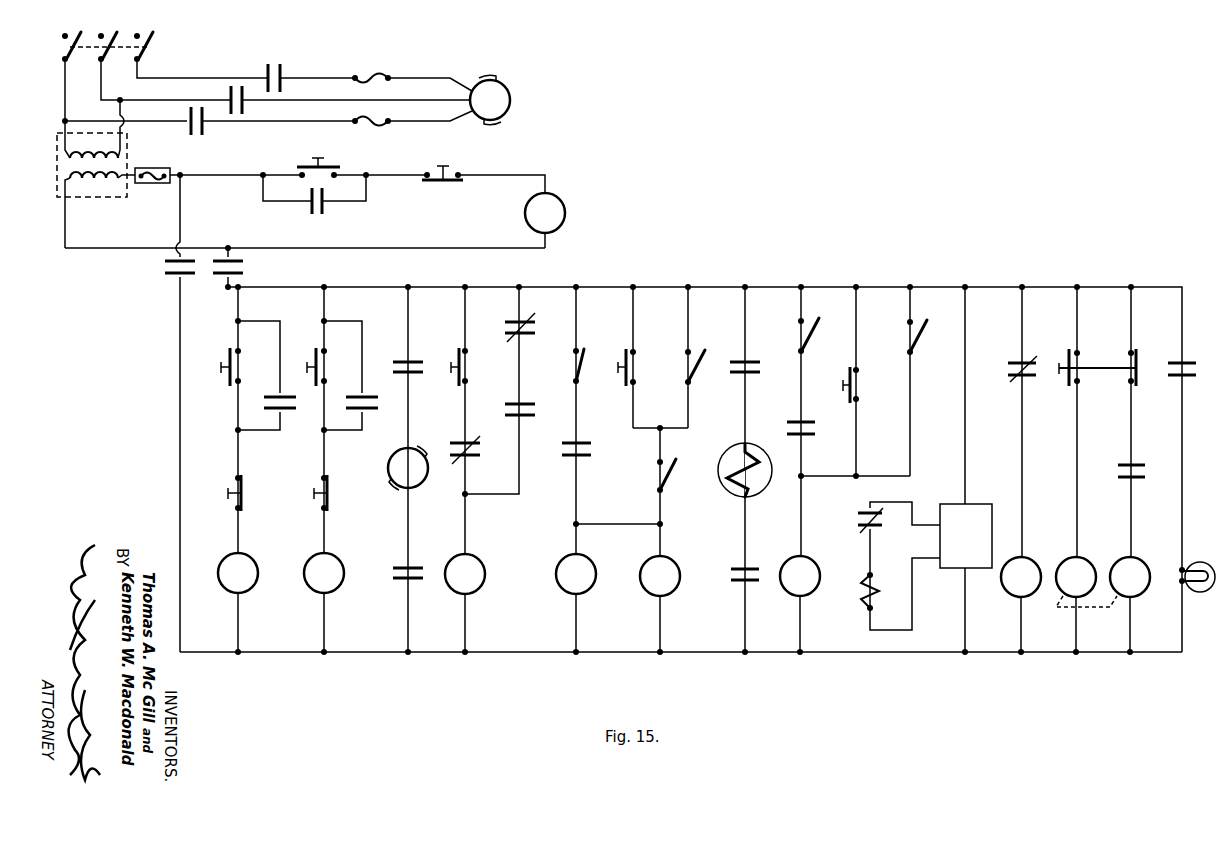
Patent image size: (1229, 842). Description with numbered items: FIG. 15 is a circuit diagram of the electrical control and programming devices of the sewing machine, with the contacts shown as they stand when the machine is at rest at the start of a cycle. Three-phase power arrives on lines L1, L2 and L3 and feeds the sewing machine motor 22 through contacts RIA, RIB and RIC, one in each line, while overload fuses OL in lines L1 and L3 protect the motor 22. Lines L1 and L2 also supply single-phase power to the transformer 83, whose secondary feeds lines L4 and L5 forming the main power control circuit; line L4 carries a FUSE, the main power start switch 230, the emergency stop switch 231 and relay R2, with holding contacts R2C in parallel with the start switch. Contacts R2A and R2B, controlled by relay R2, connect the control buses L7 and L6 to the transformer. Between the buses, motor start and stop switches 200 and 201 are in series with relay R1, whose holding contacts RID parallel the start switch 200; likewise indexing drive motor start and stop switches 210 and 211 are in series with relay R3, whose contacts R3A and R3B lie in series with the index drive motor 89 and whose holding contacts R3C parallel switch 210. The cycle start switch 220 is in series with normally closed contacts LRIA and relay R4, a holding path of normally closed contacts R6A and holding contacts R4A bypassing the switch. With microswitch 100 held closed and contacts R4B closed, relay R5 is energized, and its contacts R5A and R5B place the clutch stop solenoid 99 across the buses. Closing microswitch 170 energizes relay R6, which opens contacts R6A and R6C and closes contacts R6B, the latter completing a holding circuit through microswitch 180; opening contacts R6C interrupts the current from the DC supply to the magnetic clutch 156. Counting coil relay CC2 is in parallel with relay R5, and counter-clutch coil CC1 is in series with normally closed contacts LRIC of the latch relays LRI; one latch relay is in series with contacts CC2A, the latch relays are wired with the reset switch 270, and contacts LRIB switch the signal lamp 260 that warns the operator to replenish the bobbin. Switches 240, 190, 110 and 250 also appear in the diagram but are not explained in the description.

The power line L1 is at (124, 78).
The power line L2 is at (164, 67).
The power line L3 is at (201, 56).
The relay contacts RIA is at (256, 74).
The relay contacts RIB is at (219, 98).
The relay contacts RIC is at (178, 125).
The overload fuse OL is at (372, 97).
The sewing machine motor 22 is at (490, 99).
The transformer 83 is at (96, 174).
The fuse FUSE is at (156, 166).
The control circuit line L4 is at (236, 168).
The main power start switch 230 is at (326, 162).
The holding contacts R2C is at (314, 199).
The emergency stop switch 231 is at (452, 167).
The relay R2 is at (511, 211).
The control circuit line L5 is at (305, 241).
The relay contacts R2A is at (169, 413).
The relay contacts R2B is at (245, 269).
The control bus L7 is at (705, 460).
The control bus L6 is at (681, 643).
The relay R1 is at (238, 469).
The holding contacts RID is at (271, 376).
The sewing machine motor start switch 200 is at (216, 364).
The sewing machine motor stop switch 201 is at (223, 490).
The relay R3 is at (324, 469).
The holding contacts R3C is at (358, 376).
The indexing drive motor start switch 210 is at (307, 364).
The indexing drive motor stop switch 211 is at (312, 490).
The relay contacts R3A is at (396, 469).
The index drive motor 89 is at (408, 468).
The relay contacts R3B is at (395, 564).
The relay R4 is at (465, 469).
The start switch 220 is at (474, 367).
The normally closed contacts LRIA is at (476, 457).
The normally closed contacts R6A is at (509, 323).
The holding contacts R4A is at (509, 400).
The relay R5 is at (576, 469).
The microswitch 100 is at (557, 366).
The relay contacts R4B is at (564, 461).
The pushbutton switch 240 is at (614, 356).
The normally open limit switch 190 is at (682, 356).
The normally open limit switch 110 is at (656, 492).
The counting coil relay CC2 is at (660, 588).
The relay contacts R5A is at (734, 469).
The clutch stop solenoid 99 is at (745, 470).
The relay contacts R5B is at (733, 565).
The relay R6 is at (800, 469).
The microswitch 180 is at (788, 336).
The normally open contacts R6B is at (789, 418).
The pushbutton switch 250 is at (867, 381).
The microswitch 170 is at (905, 380).
The D.C. supply DC is at (966, 469).
The normally closed contacts R6C is at (886, 538).
The magnetic clutch 156 is at (890, 594).
The counter-clutch coil CC1 is at (1021, 469).
The normally closed contacts LRIC is at (1007, 363).
The latch relays LRI is at (1103, 469).
The reset switch 270 is at (1097, 367).
The counter contacts CC2A is at (1147, 462).
The relay contacts LRIB is at (1193, 360).
The signal lamp 260 is at (1197, 568).